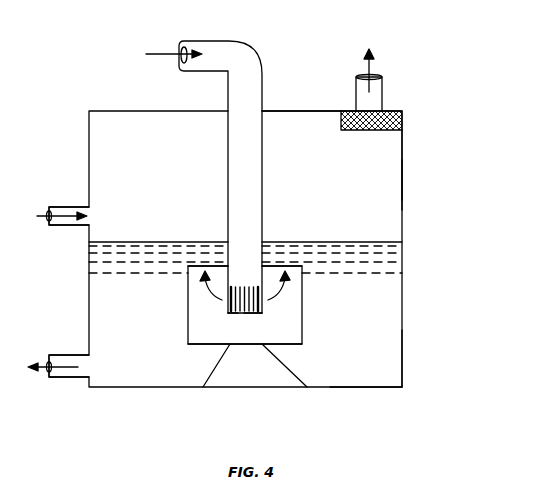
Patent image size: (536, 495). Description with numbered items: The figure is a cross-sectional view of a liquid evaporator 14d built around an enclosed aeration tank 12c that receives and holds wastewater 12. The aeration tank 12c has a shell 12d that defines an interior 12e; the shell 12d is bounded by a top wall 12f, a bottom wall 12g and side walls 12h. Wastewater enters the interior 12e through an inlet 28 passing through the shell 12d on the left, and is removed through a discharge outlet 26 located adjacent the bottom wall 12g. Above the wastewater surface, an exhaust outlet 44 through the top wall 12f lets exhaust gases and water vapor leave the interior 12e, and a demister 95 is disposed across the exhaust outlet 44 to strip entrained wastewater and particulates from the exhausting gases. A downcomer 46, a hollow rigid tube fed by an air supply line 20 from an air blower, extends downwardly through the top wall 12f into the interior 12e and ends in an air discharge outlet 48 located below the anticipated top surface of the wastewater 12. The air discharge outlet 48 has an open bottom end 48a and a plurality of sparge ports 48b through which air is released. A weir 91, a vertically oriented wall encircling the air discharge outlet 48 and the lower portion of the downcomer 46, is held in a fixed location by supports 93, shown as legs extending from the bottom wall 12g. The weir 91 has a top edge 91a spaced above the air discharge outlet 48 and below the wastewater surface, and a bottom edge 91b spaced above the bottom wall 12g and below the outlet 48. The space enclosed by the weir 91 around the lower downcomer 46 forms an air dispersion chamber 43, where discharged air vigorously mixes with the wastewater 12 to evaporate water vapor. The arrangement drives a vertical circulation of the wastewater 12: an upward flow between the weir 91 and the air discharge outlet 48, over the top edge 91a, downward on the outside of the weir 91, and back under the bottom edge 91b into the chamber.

The wastewater 12 is at (385, 241).
The aeration tank 12c is at (408, 180).
The shell 12d is at (404, 147).
The interior 12e is at (351, 331).
The top wall 12f is at (300, 110).
The bottom wall 12g is at (373, 388).
The side wall 12h is at (404, 363).
The liquid evaporator 14d is at (85, 76).
The air supply line 20 is at (159, 53).
The discharge outlet 26 is at (75, 380).
The inlet 28 is at (63, 206).
The air dispersion chamber 43 is at (248, 328).
The exhaust outlet 44 is at (383, 95).
The downcomer 46 is at (228, 138).
The air discharge outlet 48 is at (228, 320).
The open bottom end 48a is at (244, 313).
The sparge ports 48b is at (230, 297).
The weir 91 is at (302, 290).
The top edge 91a is at (291, 269).
The bottom edge 91b is at (295, 344).
The supports 93 is at (212, 373).
The demister 95 is at (404, 118).